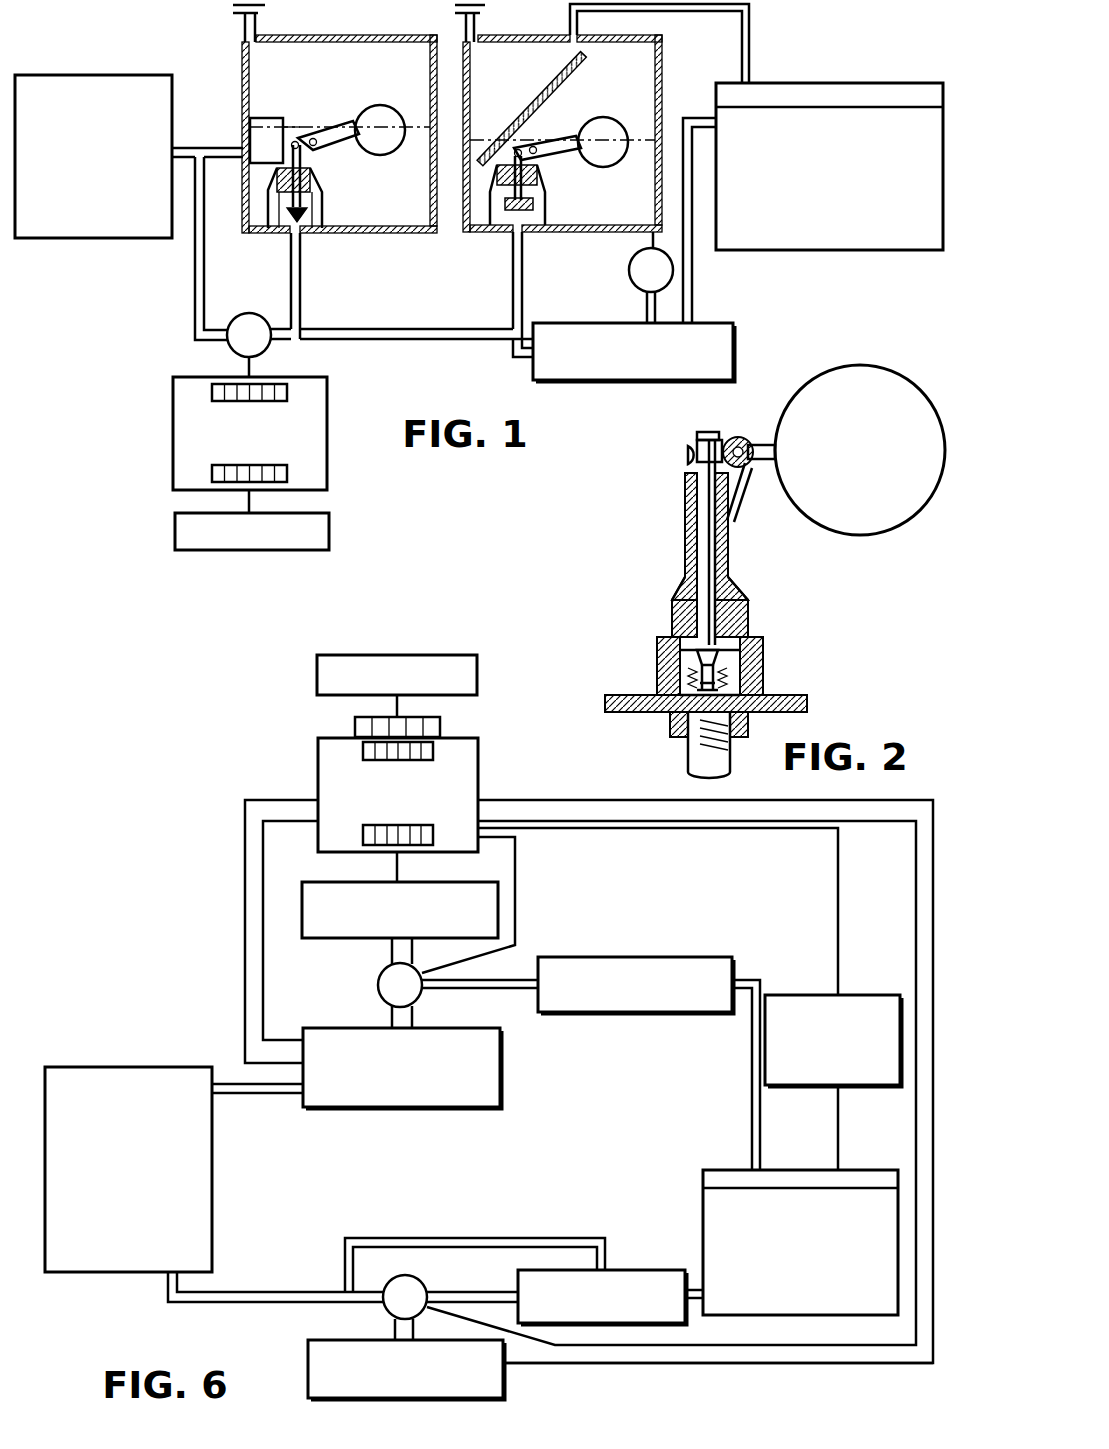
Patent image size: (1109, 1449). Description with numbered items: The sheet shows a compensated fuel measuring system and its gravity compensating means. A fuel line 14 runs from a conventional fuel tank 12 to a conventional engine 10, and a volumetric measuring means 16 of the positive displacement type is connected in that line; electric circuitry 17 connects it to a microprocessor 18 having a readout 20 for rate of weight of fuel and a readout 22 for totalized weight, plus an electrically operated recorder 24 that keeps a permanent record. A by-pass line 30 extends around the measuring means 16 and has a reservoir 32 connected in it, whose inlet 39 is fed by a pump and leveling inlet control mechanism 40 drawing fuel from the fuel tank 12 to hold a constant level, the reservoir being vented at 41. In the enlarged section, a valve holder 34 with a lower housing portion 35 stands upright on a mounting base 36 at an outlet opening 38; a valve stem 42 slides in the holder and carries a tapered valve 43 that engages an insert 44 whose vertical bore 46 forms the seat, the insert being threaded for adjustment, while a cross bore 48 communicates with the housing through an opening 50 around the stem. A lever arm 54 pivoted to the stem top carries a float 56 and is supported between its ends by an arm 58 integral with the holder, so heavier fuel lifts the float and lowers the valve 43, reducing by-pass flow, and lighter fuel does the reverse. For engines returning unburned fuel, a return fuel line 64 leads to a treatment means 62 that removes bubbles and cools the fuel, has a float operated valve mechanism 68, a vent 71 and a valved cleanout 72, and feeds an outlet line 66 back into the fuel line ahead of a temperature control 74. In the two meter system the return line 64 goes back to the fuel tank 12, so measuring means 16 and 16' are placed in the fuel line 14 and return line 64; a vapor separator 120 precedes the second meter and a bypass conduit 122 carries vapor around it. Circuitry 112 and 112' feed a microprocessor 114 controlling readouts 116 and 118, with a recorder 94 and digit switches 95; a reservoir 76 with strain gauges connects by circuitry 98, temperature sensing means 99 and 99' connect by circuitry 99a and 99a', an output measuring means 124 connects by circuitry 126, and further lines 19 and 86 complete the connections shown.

In FIG. 1, the engine 10 is at (843, 95).
In FIG. 6, the engine 10 is at (803, 1178).
In FIG. 1, the fuel tank 12 is at (100, 90).
In FIG. 6, the fuel tank 12 is at (143, 1070).
In FIG. 1, the fuel line 14 is at (195, 290).
In FIG. 6, the fuel line 14 is at (263, 1094).
In FIG. 1, the volumetric measuring means 16 is at (243, 320).
In FIG. 6, the volumetric measuring means 16 is at (380, 983).
In FIG. 6, the volumetric measuring means 16' is at (422, 1300).
In FIG. 1, the electric circuitry 17 is at (254, 372).
In FIG. 1, the microprocessor 18 is at (188, 424).
In FIG. 6, the signal line 19 is at (520, 882).
In FIG. 1, the readout 20 is at (232, 386).
In FIG. 1, the readout 22 is at (282, 474).
In FIG. 1, the recorder 24 is at (258, 551).
In FIG. 1, the by-pass line 30 is at (237, 252).
In FIG. 2, the by-pass line 30 is at (690, 762).
In FIG. 1, the reservoir 32 is at (407, 237).
In FIG. 2, the reservoir 32 is at (646, 712).
In FIG. 1, the valve holder 34 is at (322, 177).
In FIG. 2, the valve holder 34 is at (686, 552).
In FIG. 2, the lower housing portion 35 is at (737, 665).
In FIG. 2, the mounting base 36 is at (762, 645).
In FIG. 1, the outlet opening 38 is at (290, 233).
In FIG. 2, the outlet opening 38 is at (748, 718).
In FIG. 1, the inlet 39 is at (242, 150).
In FIG. 1, the pump and leveling inlet control mechanism 40 is at (265, 117).
In FIG. 1, the vent 41 is at (258, 20).
In FIG. 2, the valve stem 42 is at (704, 502).
In FIG. 1, the tapered valve 43 is at (302, 230).
In FIG. 2, the tapered valve 43 is at (690, 651).
In FIG. 2, the insert 44 is at (682, 680).
In FIG. 2, the vertical bore 46 is at (722, 683).
In FIG. 2, the cross bore 48 is at (736, 622).
In FIG. 2, the opening 50 is at (682, 624).
In FIG. 1, the lever arm 54 is at (337, 147).
In FIG. 2, the lever arm 54 is at (760, 446).
In FIG. 1, the float 56 is at (376, 113).
In FIG. 2, the float 56 is at (868, 520).
In FIG. 2, the arm 58 is at (738, 478).
In FIG. 1, the treatment means 62 is at (662, 63).
In FIG. 1, the return fuel line 64 is at (752, 45).
In FIG. 6, the return fuel line 64 is at (257, 1293).
In FIG. 1, the outlet line 66 is at (512, 289).
In FIG. 1, the float operated valve mechanism 68 is at (553, 160).
In FIG. 1, the vent 71 is at (478, 22).
In FIG. 1, the valved cleanout 72 is at (648, 240).
In FIG. 1, the temperature control 74 is at (622, 382).
In FIG. 6, the temperature control 74 is at (657, 953).
In FIG. 6, the reservoir 76 is at (472, 1095).
In FIG. 6, the signal line 86 is at (245, 950).
In FIG. 6, the recorder 94 is at (317, 668).
In FIG. 6, the digit switches 95 is at (441, 724).
In FIG. 6, the circuitry 98 is at (264, 973).
In FIG. 6, the temperature sensing means 99 is at (391, 896).
In FIG. 6, the temperature sensing means 99' is at (387, 1370).
In FIG. 6, the circuitry 99a is at (432, 868).
In FIG. 6, the circuitry 99a' is at (718, 1378).
In FIG. 6, the circuitry 112 is at (437, 958).
In FIG. 6, the circuitry 112' is at (671, 1083).
In FIG. 6, the microprocessor 114 is at (480, 775).
In FIG. 6, the readout 116 is at (380, 853).
In FIG. 6, the readout 118 is at (363, 751).
In FIG. 6, the vapor separator 120 is at (645, 1272).
In FIG. 6, the bypass conduit 122 is at (448, 1238).
In FIG. 6, the output measuring means 124 is at (805, 995).
In FIG. 6, the circuitry 126 is at (762, 828).